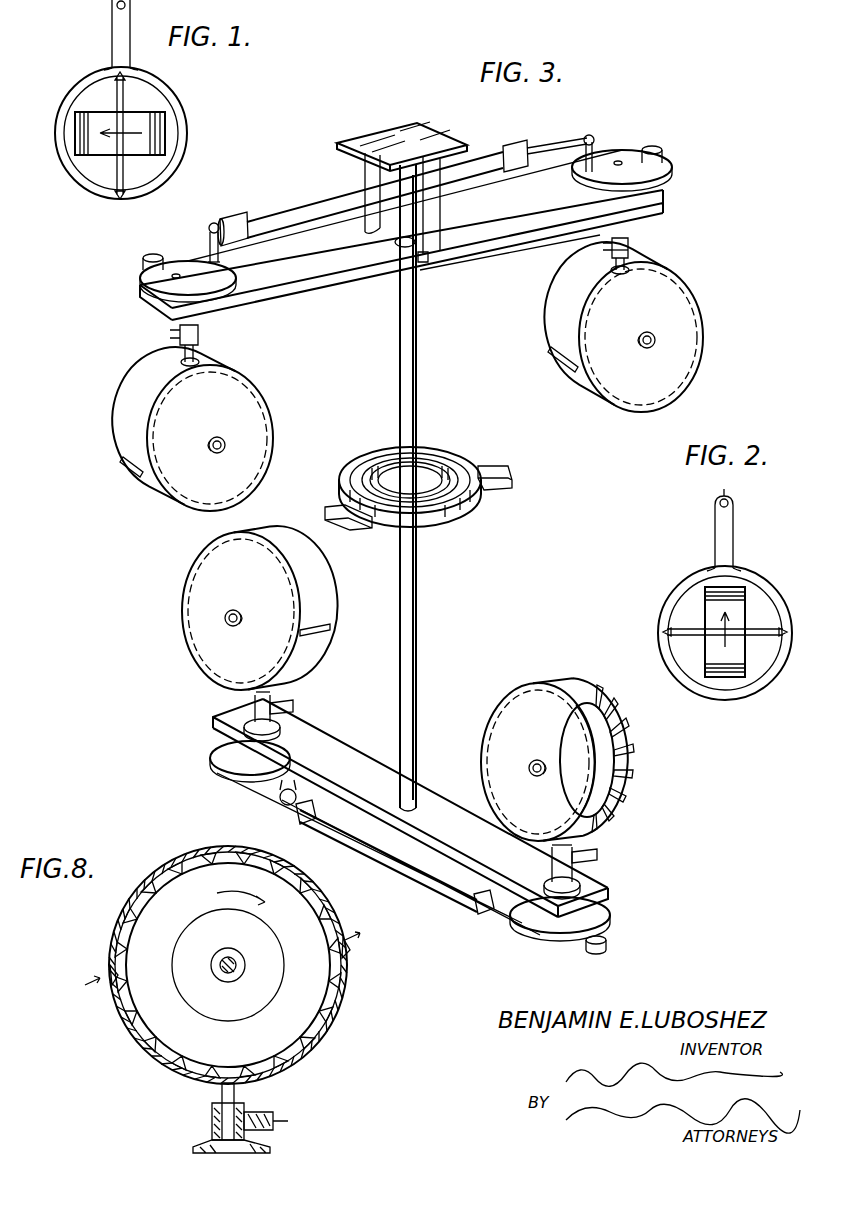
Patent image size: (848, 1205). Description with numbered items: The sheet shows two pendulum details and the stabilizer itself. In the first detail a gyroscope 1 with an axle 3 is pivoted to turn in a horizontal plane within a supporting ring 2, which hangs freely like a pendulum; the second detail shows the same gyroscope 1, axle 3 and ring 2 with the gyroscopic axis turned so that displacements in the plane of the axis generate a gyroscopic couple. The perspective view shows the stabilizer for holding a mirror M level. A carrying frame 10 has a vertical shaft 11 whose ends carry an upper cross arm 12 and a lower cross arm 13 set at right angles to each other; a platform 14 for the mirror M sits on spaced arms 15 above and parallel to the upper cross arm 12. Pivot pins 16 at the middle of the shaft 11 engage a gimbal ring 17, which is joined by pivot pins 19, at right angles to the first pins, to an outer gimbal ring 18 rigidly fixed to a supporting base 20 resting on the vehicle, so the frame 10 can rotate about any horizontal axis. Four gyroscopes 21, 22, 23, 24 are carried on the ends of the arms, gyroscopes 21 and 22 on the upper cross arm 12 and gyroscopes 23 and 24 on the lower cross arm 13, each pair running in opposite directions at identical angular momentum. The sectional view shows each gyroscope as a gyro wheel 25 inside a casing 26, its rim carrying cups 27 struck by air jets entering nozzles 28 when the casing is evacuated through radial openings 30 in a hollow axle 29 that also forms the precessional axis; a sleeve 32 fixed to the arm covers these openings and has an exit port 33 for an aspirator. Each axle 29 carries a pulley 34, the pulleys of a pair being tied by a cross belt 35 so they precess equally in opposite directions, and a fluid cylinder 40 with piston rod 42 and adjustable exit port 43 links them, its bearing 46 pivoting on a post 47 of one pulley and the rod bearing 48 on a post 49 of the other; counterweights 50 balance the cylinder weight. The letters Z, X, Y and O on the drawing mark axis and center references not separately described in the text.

In FIG. 1, the gyroscope 1 is at (150, 115).
In FIG. 2, the gyroscope 1 is at (742, 650).
In FIG. 1, the supporting ring 2 is at (170, 95).
In FIG. 2, the supporting ring 2 is at (682, 588).
In FIG. 1, the axle 3 is at (126, 160).
In FIG. 2, the axle 3 is at (698, 628).
In FIG. 3, the carrying frame 10 is at (342, 288).
In FIG. 3, the vertical shaft 11 is at (420, 590).
In FIG. 3, the upper cross arm 12 is at (478, 233).
In FIG. 3, the lower cross arm 13 is at (350, 760).
In FIG. 3, the platform 14 is at (340, 146).
In FIG. 3, the spaced arms 15 is at (445, 160).
In FIG. 3, the pivot pins 16 is at (390, 455).
In FIG. 3, the gimbal ring 17 is at (445, 452).
In FIG. 3, the outer gimbal ring 18 is at (360, 458).
In FIG. 3, the pivot pins 19 is at (450, 468).
In FIG. 3, the supporting base 20 is at (510, 474).
In FIG. 3, the gyroscope 21 is at (138, 385).
In FIG. 3, the gyroscope 22 is at (692, 280).
In FIG. 3, the gyroscope 23 is at (185, 584).
In FIG. 3, the gyroscope 24 is at (496, 712).
In FIG. 3, the gyro wheel 25 is at (605, 702).
In FIG. 8, the gyro wheel 25 is at (190, 868).
In FIG. 3, the casing 26 is at (556, 690).
In FIG. 8, the casing 26 is at (340, 1018).
In FIG. 3, the cups 27 is at (620, 758).
In FIG. 8, the cups 27 is at (330, 916).
In FIG. 3, the nozzles 28 is at (548, 352).
In FIG. 8, the nozzles 28 is at (108, 966).
In FIG. 3, the axle 29 is at (630, 246).
In FIG. 8, the axle 29 is at (222, 1096).
In FIG. 8, the radial openings 30 is at (212, 1118).
In FIG. 3, the sleeve 32 is at (250, 712).
In FIG. 8, the sleeve 32 is at (205, 1138).
In FIG. 3, the exit port 33 is at (293, 706).
In FIG. 8, the exit port 33 is at (275, 1116).
In FIG. 3, the pulley 34 is at (168, 262).
In FIG. 3, the cross belt 35 is at (270, 798).
In FIG. 3, the fluid cylinder 40 is at (305, 208).
In FIG. 3, the piston rod 42 is at (542, 148).
In FIG. 3, the adjustable exit port 43 is at (242, 216).
In FIG. 3, the bearing 46 is at (214, 222).
In FIG. 3, the post 47 is at (204, 248).
In FIG. 3, the bearing 48 is at (594, 140).
In FIG. 3, the post 49 is at (586, 136).
In FIG. 3, the counterweights 50 is at (148, 256).
In FIG. 3, the mirror M is at (368, 135).
In FIG. 3, the vertical axis Z is at (403, 260).
In FIG. 3, the center point O is at (420, 455).
In FIG. 3, the horizontal axis X is at (478, 462).
In FIG. 3, the horizontal axis Y is at (470, 504).